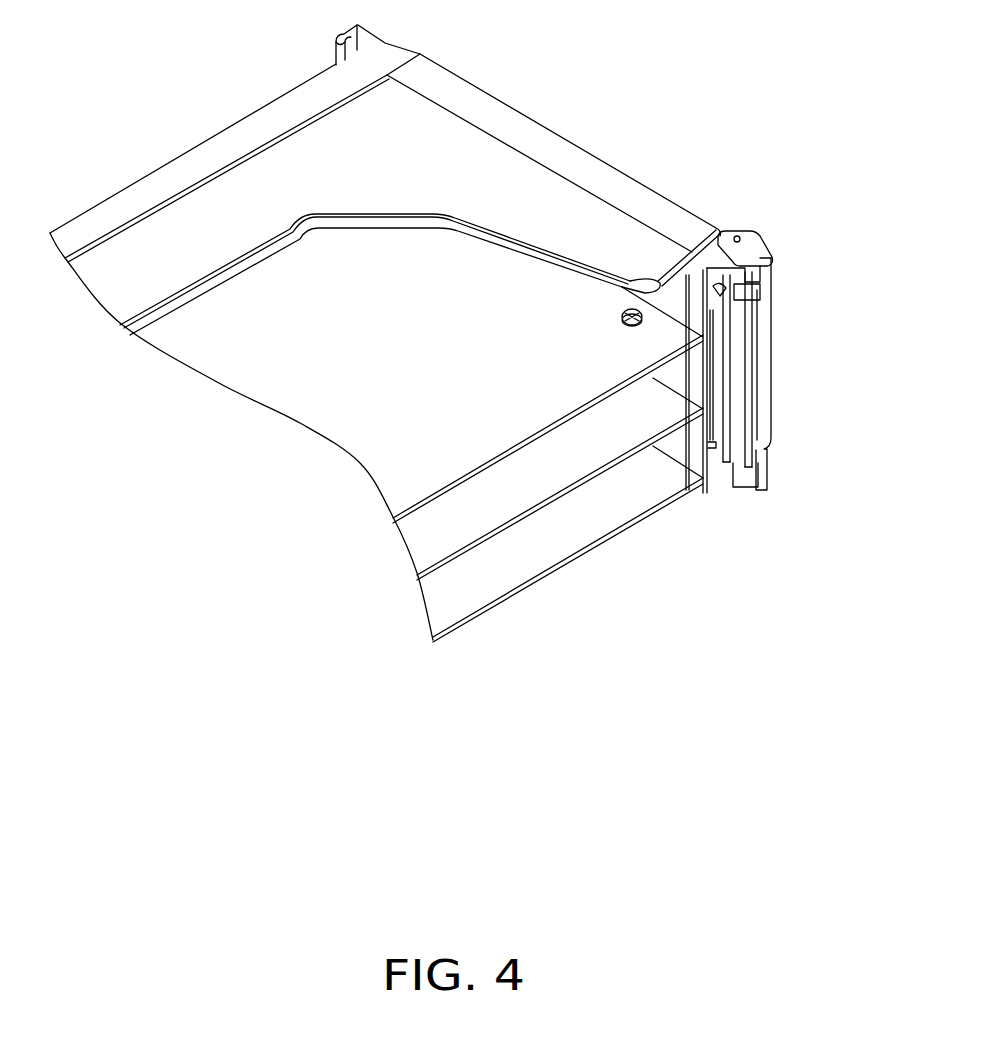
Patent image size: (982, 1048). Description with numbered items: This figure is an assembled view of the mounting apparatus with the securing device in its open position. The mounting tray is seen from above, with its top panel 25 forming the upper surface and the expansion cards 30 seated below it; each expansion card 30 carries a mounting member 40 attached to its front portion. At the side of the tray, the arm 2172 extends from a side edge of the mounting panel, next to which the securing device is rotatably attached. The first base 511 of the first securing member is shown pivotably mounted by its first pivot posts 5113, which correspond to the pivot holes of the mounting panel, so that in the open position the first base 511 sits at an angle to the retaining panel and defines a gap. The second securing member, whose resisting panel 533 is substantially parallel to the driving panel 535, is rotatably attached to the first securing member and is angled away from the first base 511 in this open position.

The top panel 25 is at (173, 223).
The expansion card 30 is at (232, 352).
The mounting member 40 is at (671, 296).
The first base 511 is at (717, 270).
The first pivot post 5113 is at (740, 238).
The arm 2172 is at (765, 327).
The resisting panel 533 is at (748, 392).
The driving panel 535 is at (730, 423).